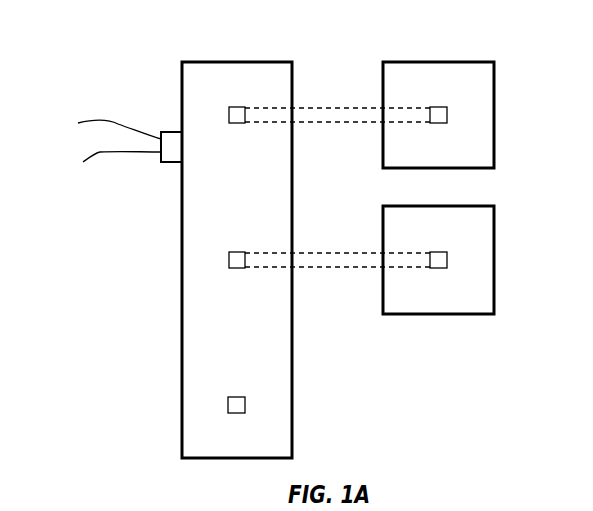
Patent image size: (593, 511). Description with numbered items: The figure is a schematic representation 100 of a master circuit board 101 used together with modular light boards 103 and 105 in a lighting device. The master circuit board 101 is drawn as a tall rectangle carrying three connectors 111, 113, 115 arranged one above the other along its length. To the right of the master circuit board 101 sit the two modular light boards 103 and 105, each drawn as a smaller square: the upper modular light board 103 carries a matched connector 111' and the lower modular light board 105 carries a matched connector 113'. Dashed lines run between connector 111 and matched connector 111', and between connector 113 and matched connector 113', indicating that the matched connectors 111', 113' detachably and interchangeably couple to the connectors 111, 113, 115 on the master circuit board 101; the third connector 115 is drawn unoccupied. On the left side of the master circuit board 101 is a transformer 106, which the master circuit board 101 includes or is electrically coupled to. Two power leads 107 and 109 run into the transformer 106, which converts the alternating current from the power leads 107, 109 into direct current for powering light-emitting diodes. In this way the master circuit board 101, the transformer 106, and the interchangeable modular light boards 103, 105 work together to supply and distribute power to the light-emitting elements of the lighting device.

The schematic representation 100 is at (86, 43).
The master circuit board 101 is at (292, 323).
The modular light board 103 is at (440, 62).
The modular light board 105 is at (440, 206).
The transformer 106 is at (170, 163).
The power lead 107 is at (97, 153).
The power lead 109 is at (112, 122).
The connector 111 is at (190, 99).
The matched connector 111' is at (488, 99).
The connector 113 is at (190, 244).
The matched connector 113' is at (489, 244).
The connector 115 is at (228, 405).